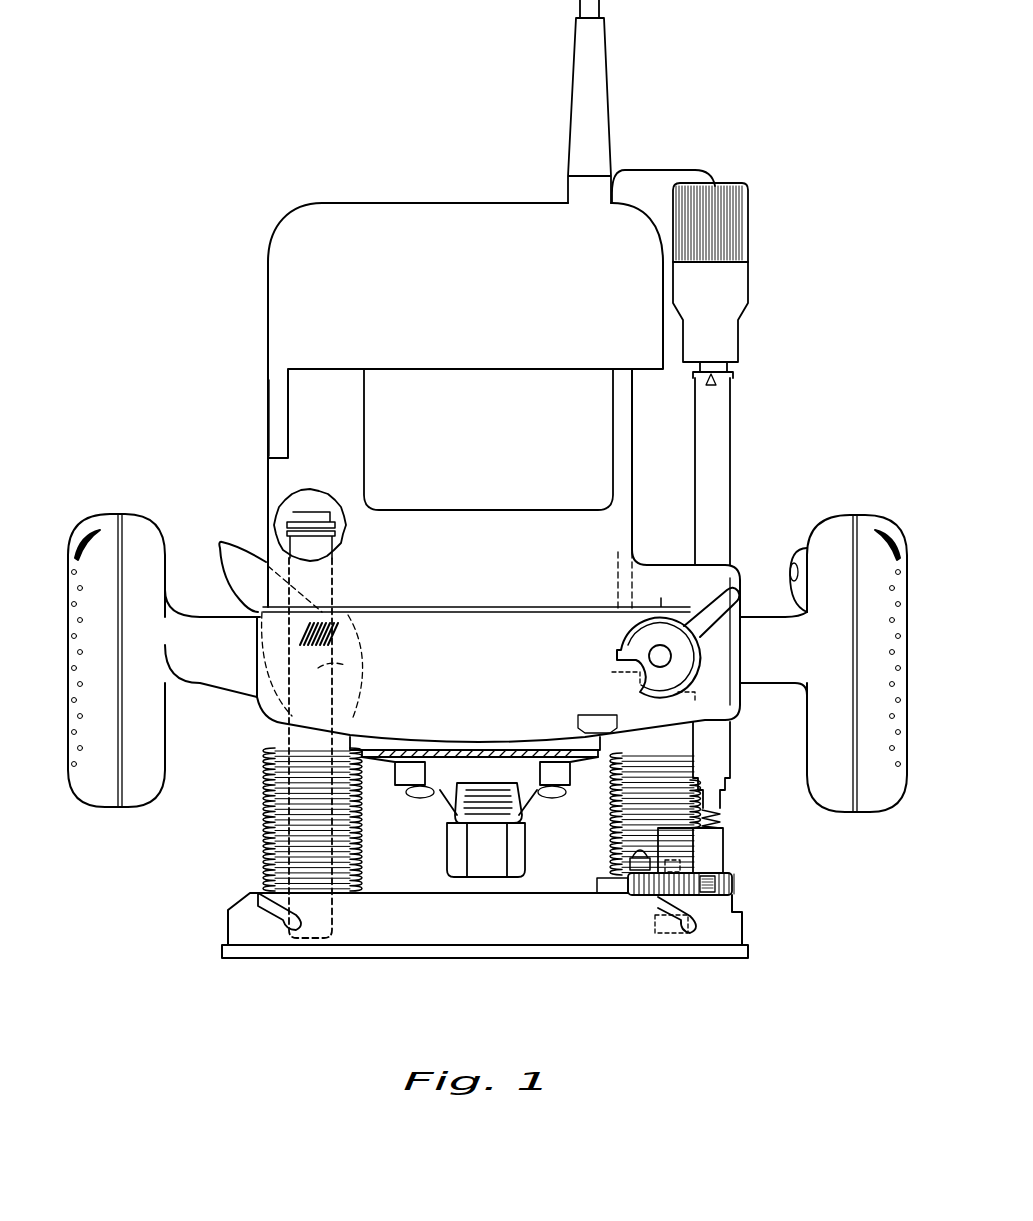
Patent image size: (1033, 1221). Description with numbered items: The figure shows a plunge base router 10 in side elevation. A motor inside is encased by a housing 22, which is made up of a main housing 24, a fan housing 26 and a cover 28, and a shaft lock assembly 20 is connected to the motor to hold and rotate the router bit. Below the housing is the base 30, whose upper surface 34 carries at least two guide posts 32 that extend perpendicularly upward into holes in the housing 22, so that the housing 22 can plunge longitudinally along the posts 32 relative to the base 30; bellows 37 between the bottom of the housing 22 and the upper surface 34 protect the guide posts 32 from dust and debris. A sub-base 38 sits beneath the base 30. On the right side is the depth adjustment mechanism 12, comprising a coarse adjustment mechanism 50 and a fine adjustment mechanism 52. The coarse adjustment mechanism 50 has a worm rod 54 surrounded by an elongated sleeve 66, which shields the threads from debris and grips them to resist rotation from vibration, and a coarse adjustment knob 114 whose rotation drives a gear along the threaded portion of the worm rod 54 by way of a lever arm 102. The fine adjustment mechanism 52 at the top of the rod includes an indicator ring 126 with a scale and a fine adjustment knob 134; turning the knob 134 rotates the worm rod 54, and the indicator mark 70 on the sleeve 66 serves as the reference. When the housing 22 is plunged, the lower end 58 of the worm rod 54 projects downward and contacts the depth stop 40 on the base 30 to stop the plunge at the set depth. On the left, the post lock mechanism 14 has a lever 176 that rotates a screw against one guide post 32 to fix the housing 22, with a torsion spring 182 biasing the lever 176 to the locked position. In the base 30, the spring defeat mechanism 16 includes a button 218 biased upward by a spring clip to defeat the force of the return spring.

The plunge base router 10 is at (272, 179).
The depth adjustment mechanism 12 is at (793, 339).
The post lock mechanism 14 is at (223, 543).
The spring defeat mechanism 16 is at (746, 890).
The shaft lock assembly 20 is at (446, 813).
The housing 22 is at (265, 349).
The main housing 24 is at (685, 572).
The fan housing 26 is at (270, 717).
The cover 28 is at (436, 222).
The base 30 is at (722, 930).
The guide posts 32 is at (258, 742).
The upper surface 34 is at (545, 892).
The bellows 37 is at (263, 851).
The sub-base 38 is at (578, 958).
The depth stop 40 is at (713, 852).
The coarse adjustment mechanism 50 is at (700, 672).
The fine adjustment mechanism 52 is at (747, 212).
The worm rod 54 is at (719, 800).
The lower end 58 is at (715, 827).
The sleeve 66 is at (733, 420).
The indicator mark 70 is at (714, 378).
The lock lever arm 102 is at (742, 600).
The coarse adjustment knob 114 is at (692, 648).
The indicator ring 126 is at (750, 283).
The fine adjustment knob 134 is at (735, 213).
The lever 176 is at (237, 583).
The torsion spring 182 is at (336, 637).
The button 218 is at (656, 933).